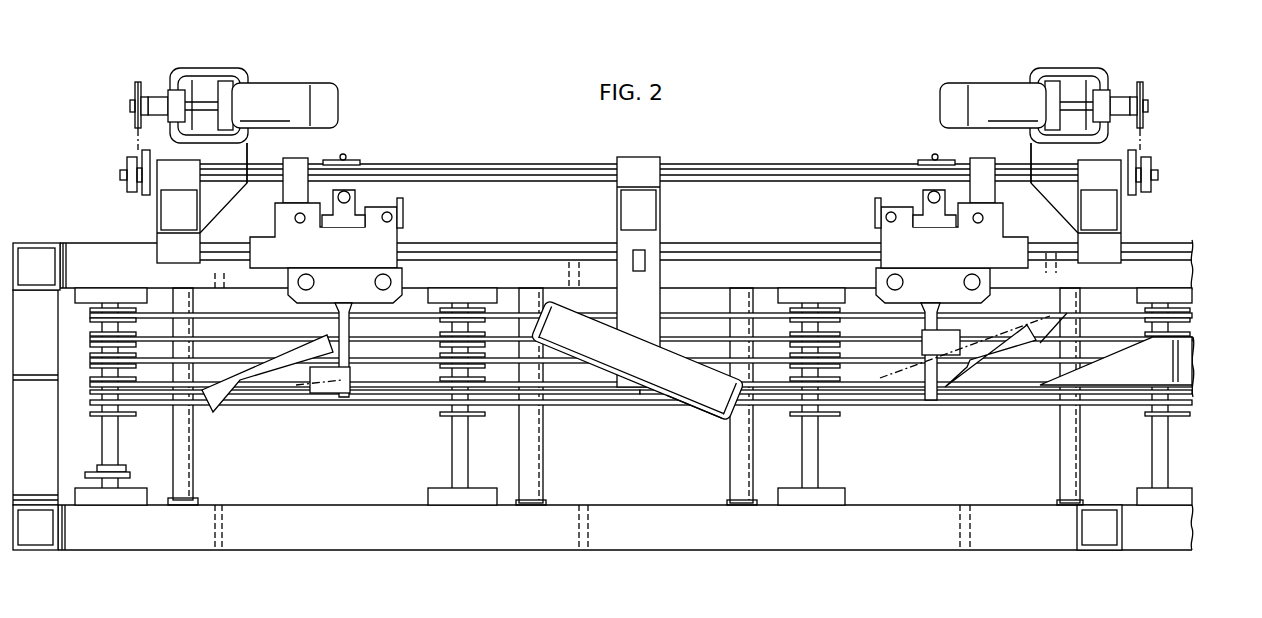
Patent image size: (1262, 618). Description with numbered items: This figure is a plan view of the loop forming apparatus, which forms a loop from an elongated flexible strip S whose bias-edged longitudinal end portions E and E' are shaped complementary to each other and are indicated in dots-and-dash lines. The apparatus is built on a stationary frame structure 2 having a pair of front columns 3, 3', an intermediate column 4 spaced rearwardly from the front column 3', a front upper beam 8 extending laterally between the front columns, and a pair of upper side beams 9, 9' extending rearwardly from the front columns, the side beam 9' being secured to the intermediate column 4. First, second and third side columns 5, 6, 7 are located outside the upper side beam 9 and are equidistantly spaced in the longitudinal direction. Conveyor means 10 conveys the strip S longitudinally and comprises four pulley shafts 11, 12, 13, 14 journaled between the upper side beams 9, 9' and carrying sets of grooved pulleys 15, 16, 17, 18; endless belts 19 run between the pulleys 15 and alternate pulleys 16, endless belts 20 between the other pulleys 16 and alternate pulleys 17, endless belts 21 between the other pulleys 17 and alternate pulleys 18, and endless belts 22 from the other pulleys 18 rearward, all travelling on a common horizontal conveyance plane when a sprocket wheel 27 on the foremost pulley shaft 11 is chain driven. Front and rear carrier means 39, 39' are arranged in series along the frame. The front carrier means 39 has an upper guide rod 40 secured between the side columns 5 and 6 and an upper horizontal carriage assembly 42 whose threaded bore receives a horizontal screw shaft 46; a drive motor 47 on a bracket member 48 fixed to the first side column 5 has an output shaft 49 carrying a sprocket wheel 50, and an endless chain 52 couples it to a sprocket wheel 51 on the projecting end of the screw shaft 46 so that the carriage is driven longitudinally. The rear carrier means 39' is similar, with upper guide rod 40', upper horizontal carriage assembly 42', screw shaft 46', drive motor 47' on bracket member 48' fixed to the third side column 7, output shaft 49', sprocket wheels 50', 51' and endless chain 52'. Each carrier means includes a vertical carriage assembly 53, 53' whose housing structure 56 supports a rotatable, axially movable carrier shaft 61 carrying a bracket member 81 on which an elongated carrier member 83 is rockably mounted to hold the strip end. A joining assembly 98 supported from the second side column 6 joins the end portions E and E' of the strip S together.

The frame structure 2 is at (294, 553).
The front column 3 is at (36, 266).
The front column 3' is at (35, 527).
The intermediate column 4 is at (1093, 542).
The first side column 5 is at (171, 226).
The second side column 6 is at (631, 224).
The third side column 7 is at (1093, 226).
The front upper beam 8 is at (29, 415).
The upper side beam 9 is at (626, 265).
The upper side beam 9' is at (625, 527).
The conveyor means 10 is at (605, 408).
The foremost pulley shaft 11 is at (120, 441).
The pulley shaft 12 is at (470, 446).
The pulley shaft 13 is at (819, 455).
The pulley shaft 14 is at (1155, 464).
The pulleys 15 is at (91, 405).
The pulleys 16 is at (442, 406).
The pulleys 17 is at (788, 412).
The pulleys 18 is at (1147, 396).
The endless belts 19 is at (370, 410).
The endless belts 20 is at (566, 388).
The endless belts 21 is at (907, 395).
The endless belts 22 is at (1197, 406).
The sprocket wheel 27 is at (132, 476).
The front carrier means 39 is at (320, 134).
The rear carrier means 39' is at (953, 134).
The upper guide rod 40 is at (408, 235).
The upper guide rod 40' is at (926, 235).
The upper horizontal carriage assembly 42 is at (318, 229).
The upper horizontal carriage assembly 42' is at (964, 229).
The horizontal screw shaft 46 is at (408, 167).
The horizontal screw shaft 46' is at (869, 167).
The drive motor 47 is at (278, 105).
The drive motor 47' is at (1000, 105).
The bracket member 48 is at (224, 93).
The bracket member 48' is at (1047, 102).
The output shaft 49 is at (162, 90).
The output shaft 49' is at (1119, 87).
The sprocket wheel 50 is at (123, 93).
The sprocket wheel 50' is at (1158, 94).
The sprocket wheel 51 is at (123, 183).
The sprocket wheel 51' is at (1157, 176).
The endless chain 52 is at (116, 138).
The endless chain 52' is at (1165, 131).
The vertical carriage assembly 53 is at (421, 218).
The vertical carriage assembly 53' is at (855, 218).
The housing structure 56 is at (333, 294).
The carrier shaft 61 is at (336, 331).
The bracket member 81 is at (323, 404).
The carrier member 83 is at (229, 413).
The joining assembly 98 is at (675, 409).
The longitudinal end portion E is at (302, 386).
The longitudinal end portion E' is at (965, 347).
The flexible strip S is at (1146, 377).